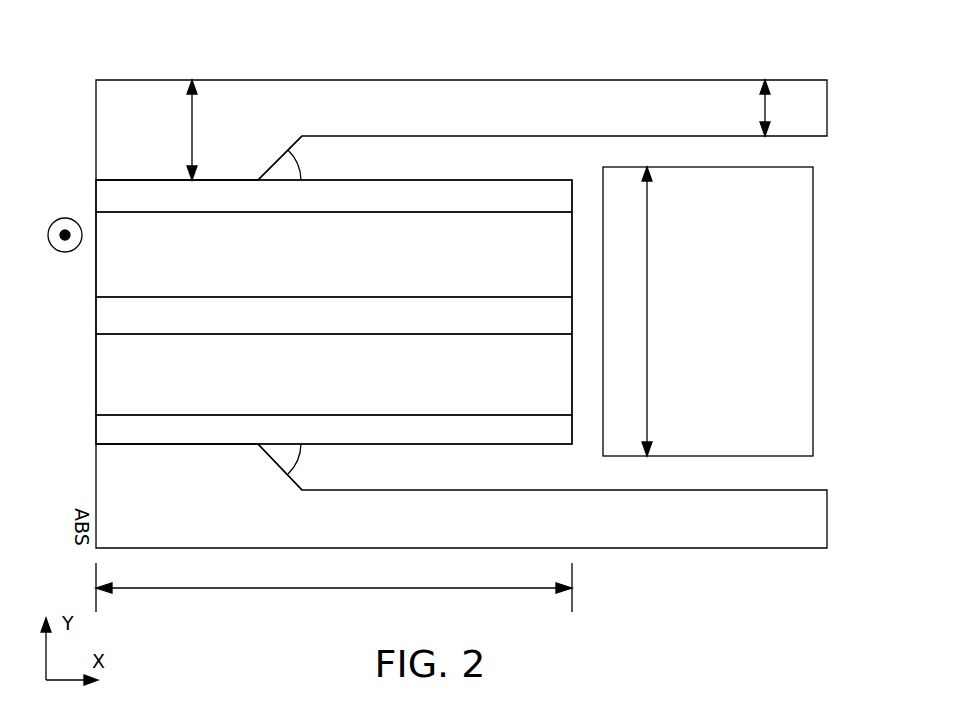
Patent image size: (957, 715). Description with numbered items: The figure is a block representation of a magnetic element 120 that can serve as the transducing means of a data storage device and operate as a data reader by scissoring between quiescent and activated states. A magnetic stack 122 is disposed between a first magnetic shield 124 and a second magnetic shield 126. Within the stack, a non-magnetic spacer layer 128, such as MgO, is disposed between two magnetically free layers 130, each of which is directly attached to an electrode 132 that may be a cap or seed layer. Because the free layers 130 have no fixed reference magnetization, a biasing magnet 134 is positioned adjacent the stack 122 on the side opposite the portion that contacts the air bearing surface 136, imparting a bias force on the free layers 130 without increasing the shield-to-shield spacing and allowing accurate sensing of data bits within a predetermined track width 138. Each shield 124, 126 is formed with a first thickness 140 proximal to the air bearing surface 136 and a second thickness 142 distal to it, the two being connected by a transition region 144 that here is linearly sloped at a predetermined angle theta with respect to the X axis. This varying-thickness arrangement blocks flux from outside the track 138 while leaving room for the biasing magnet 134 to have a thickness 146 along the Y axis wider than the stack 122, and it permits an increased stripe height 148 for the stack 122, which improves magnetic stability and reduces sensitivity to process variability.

The magnetic element 120 is at (745, 47).
The magnetic stack 122 is at (88, 333).
The first magnetic shield 124 is at (461, 496).
The second magnetic shield 126 is at (461, 130).
The non-magnetic spacer layer 128 is at (334, 315).
The magnetically free layer 130 is at (334, 313).
The electrode 132 is at (334, 312).
The biasing magnet 134 is at (708, 311).
The air bearing surface 136 is at (63, 90).
The track width 138 is at (65, 224).
The first thickness 140 is at (211, 130).
The second thickness 142 is at (746, 108).
The transition region 144 is at (281, 146).
The thickness of biasing magnet 146 is at (630, 311).
The stripe height 148 is at (334, 589).